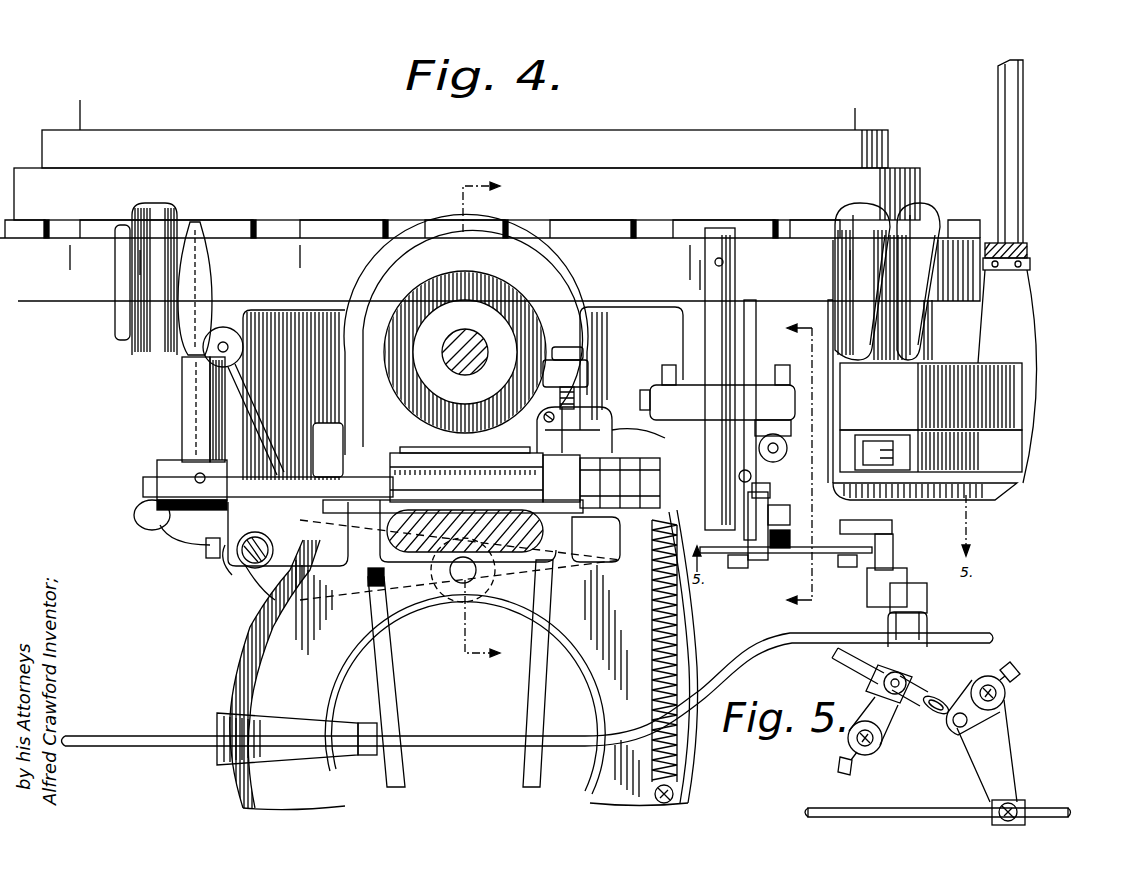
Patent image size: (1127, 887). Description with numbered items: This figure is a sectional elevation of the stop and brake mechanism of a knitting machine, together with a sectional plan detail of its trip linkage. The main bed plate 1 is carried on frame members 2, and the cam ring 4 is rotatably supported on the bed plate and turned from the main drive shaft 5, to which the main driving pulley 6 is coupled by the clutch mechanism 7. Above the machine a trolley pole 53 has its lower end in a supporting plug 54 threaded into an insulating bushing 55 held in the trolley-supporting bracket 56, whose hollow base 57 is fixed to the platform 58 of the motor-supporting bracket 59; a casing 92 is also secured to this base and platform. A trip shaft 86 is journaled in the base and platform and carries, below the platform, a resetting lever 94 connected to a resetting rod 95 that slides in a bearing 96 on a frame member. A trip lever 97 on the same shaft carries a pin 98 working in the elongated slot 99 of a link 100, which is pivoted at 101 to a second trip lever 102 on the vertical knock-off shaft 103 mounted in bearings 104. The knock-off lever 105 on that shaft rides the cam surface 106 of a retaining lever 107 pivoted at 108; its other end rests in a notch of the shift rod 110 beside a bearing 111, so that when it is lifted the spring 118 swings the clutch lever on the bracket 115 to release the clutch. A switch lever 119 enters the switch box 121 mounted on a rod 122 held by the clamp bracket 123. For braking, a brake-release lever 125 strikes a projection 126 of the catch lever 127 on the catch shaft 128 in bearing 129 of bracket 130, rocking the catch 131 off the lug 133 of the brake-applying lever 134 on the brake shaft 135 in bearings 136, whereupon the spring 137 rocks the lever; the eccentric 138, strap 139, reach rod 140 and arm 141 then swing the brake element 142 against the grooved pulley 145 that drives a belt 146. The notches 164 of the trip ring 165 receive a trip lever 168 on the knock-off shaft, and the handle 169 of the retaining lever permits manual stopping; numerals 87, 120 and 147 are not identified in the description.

In FIG. 4, the main bed plate 1 is at (303, 278).
In FIG. 4, the frame members 2 is at (300, 792).
In FIG. 4, the cam ring 4 is at (423, 200).
In FIG. 4, the main drive shaft 5 is at (455, 352).
In FIG. 4, the main driving pulley 6 is at (787, 465).
In FIG. 4, the clutch mechanism 7 is at (491, 421).
In FIG. 4, the trolley pole 53 is at (1023, 134).
In FIG. 4, the supporting plug 54 is at (1030, 260).
In FIG. 4, the insulating bushing 55 is at (1032, 269).
In FIG. 4, the trolley-supporting bracket 56 is at (1032, 318).
In FIG. 4, the hollow base 57 is at (1012, 453).
In FIG. 4, the platform 58 is at (1011, 485).
In FIG. 4, the motor-supporting bracket 59 is at (925, 213).
In FIG. 4, the trip shaft 86 is at (893, 556).
In FIG. 5, the trip shaft 86 is at (1005, 700).
In FIG. 4, the box 87 is at (873, 443).
In FIG. 4, the casing 92 is at (1012, 403).
In FIG. 4, the resetting lever 94 is at (925, 597).
In FIG. 5, the resetting lever 94 is at (1010, 762).
In FIG. 4, the resetting rod 95 is at (146, 735).
In FIG. 5, the resetting rod 95 is at (953, 810).
In FIG. 4, the bearing 96 is at (367, 758).
In FIG. 4, the trip lever 97 is at (905, 533).
In FIG. 5, the trip lever 97 is at (1000, 717).
In FIG. 4, the pin or screw 98 is at (847, 567).
In FIG. 5, the pin or screw 98 is at (960, 728).
In FIG. 5, the elongated slot 99 is at (935, 714).
In FIG. 4, the link 100 is at (795, 548).
In FIG. 5, the link 100 is at (922, 690).
In FIG. 4, the pivotal connection 101 is at (772, 512).
In FIG. 5, the pivotal connection 101 is at (902, 678).
In FIG. 4, the second trip lever 102 is at (780, 525).
In FIG. 5, the second trip lever 102 is at (885, 732).
In FIG. 4, the knock-off shaft 103 is at (735, 568).
In FIG. 5, the knock-off shaft 103 is at (850, 746).
In FIG. 4, the bearings 104 is at (756, 345).
In FIG. 4, the knock-off lever 105 is at (752, 476).
In FIG. 4, the cam surface 106 is at (770, 492).
In FIG. 4, the retaining lever 107 is at (212, 528).
In FIG. 4, the pivot 108 is at (460, 582).
In FIG. 4, the shift rod 110 is at (245, 570).
In FIG. 4, the bearing 111 is at (236, 566).
In FIG. 4, the bracket 115 is at (522, 557).
In FIG. 4, the spring 118 is at (258, 570).
In FIG. 4, the switch lever 119 is at (252, 582).
In FIG. 4, the link 120 is at (274, 445).
In FIG. 4, the switch box 121 is at (205, 418).
In FIG. 4, the rod 122 is at (222, 350).
In FIG. 4, the clamp bracket 123 is at (160, 212).
In FIG. 4, the brake-release lever 125 is at (787, 448).
In FIG. 4, the projection 126 is at (785, 438).
In FIG. 4, the catch lever 127 is at (795, 392).
In FIG. 4, the catch shaft 128 is at (649, 395).
In FIG. 4, the bearing 129 is at (745, 403).
In FIG. 4, the bracket 130 is at (650, 425).
In FIG. 4, the catch 131 is at (660, 385).
In FIG. 4, the lug 133 is at (655, 432).
In FIG. 4, the brake-applying lever 134 is at (620, 483).
In FIG. 4, the brake shaft 135 is at (143, 485).
In FIG. 4, the bearings 136 is at (545, 478).
In FIG. 4, the spring 137 is at (652, 670).
In FIG. 4, the eccentric 138 is at (602, 517).
In FIG. 4, the strap 139 is at (548, 417).
In FIG. 4, the reach rod 140 is at (585, 355).
In FIG. 4, the arm 141 is at (588, 365).
In FIG. 4, the brake element 142 is at (465, 442).
In FIG. 4, the grooved pulley 145 is at (478, 321).
In FIG. 4, the belt 146 is at (398, 697).
In FIG. 4, the block 147 is at (185, 448).
In FIG. 4, the notches 164 is at (262, 224).
In FIG. 4, the trip ring 165 is at (36, 222).
In FIG. 4, the trip lever 168 is at (712, 258).
In FIG. 4, the handle 169 is at (138, 522).